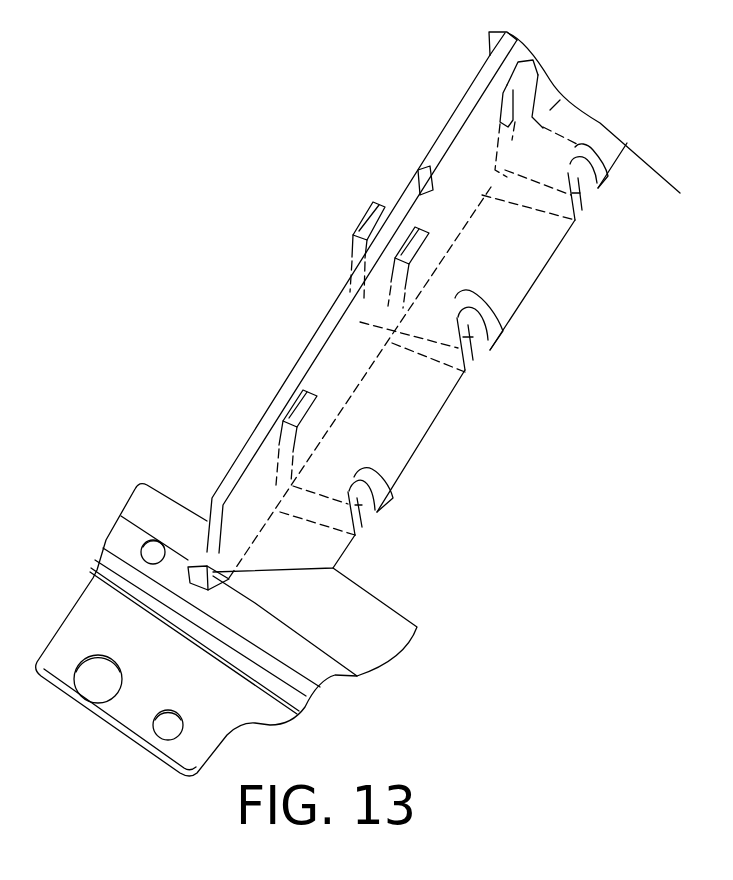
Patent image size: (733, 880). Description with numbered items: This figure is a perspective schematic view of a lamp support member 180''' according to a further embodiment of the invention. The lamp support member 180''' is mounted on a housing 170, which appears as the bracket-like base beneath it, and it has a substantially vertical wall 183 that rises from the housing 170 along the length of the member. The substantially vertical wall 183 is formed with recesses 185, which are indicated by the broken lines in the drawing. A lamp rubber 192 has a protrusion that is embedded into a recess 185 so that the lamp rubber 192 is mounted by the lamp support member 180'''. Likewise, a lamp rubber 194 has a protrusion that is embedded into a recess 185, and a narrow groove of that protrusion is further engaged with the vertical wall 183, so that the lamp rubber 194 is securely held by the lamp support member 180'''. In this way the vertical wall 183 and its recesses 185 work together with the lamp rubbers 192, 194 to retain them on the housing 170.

The housing 170 is at (325, 673).
The lamp support member 180''' is at (446, 305).
The substantially vertical wall 183 is at (213, 495).
The recesses 185 is at (386, 222).
The lamp rubber 192 is at (345, 462).
The lamp rubber 194 is at (446, 297).